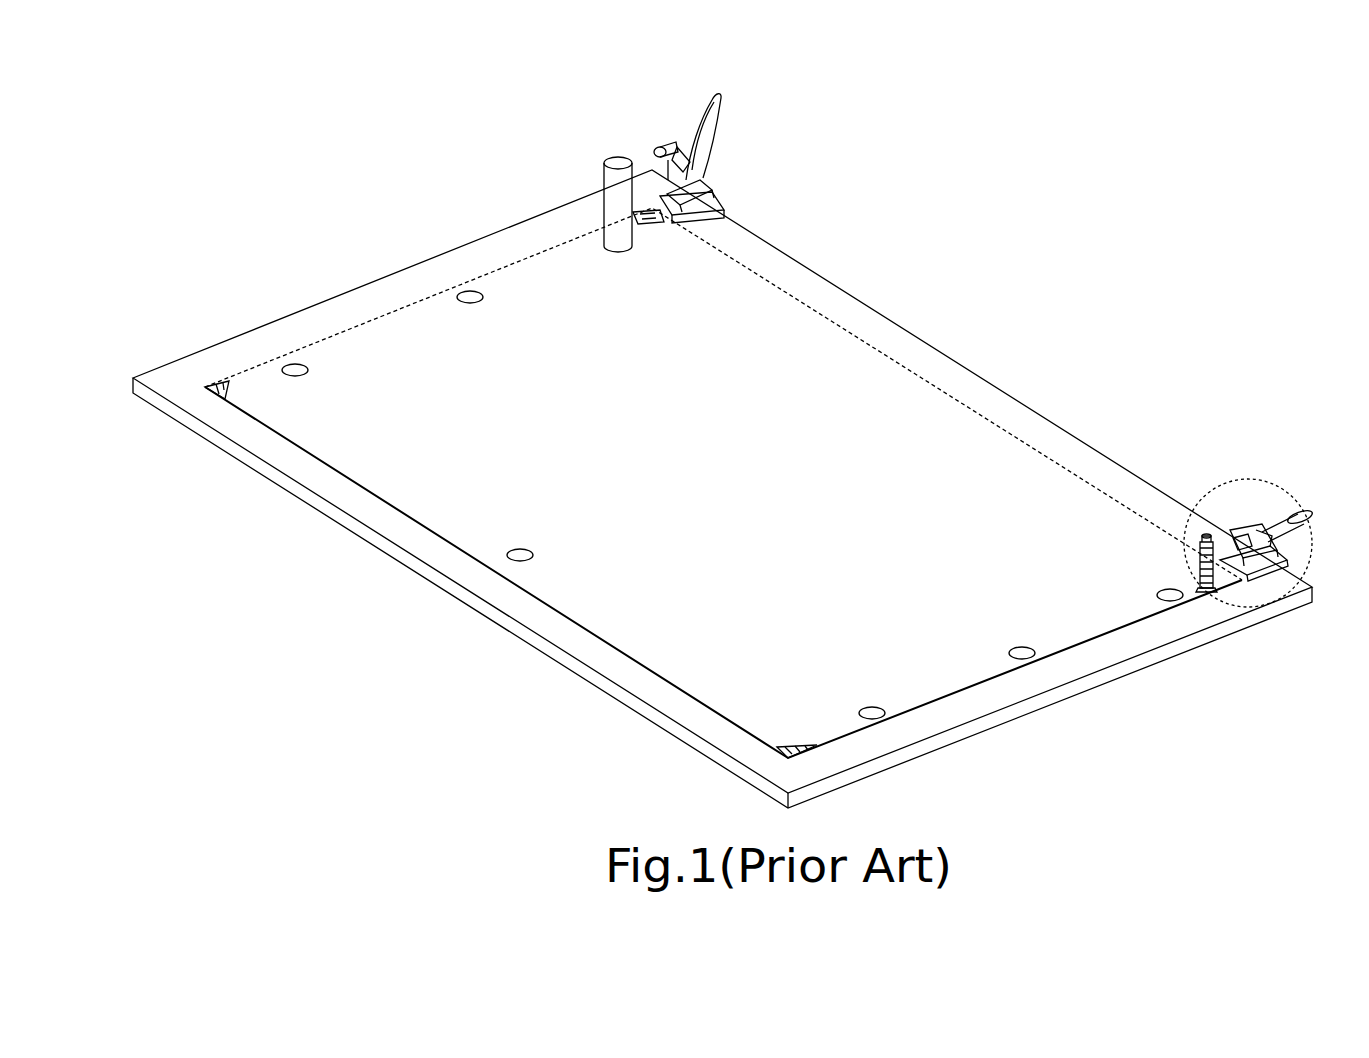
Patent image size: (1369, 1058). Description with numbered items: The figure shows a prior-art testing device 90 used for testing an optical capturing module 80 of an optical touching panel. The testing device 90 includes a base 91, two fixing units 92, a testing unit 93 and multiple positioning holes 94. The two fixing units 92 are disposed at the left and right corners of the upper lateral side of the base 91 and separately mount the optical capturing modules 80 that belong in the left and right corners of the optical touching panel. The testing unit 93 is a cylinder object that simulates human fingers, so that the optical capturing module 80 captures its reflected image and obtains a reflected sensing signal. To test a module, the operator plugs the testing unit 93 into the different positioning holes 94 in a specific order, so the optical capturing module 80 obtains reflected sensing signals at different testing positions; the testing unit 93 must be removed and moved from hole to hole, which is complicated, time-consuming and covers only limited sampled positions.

The testing device 90 is at (920, 300).
The base 91 is at (992, 402).
The fixing unit 92 is at (708, 189).
The testing unit 93 is at (613, 223).
The positioning hole 94 is at (295, 362).
The optical capturing module 80 is at (1222, 567).